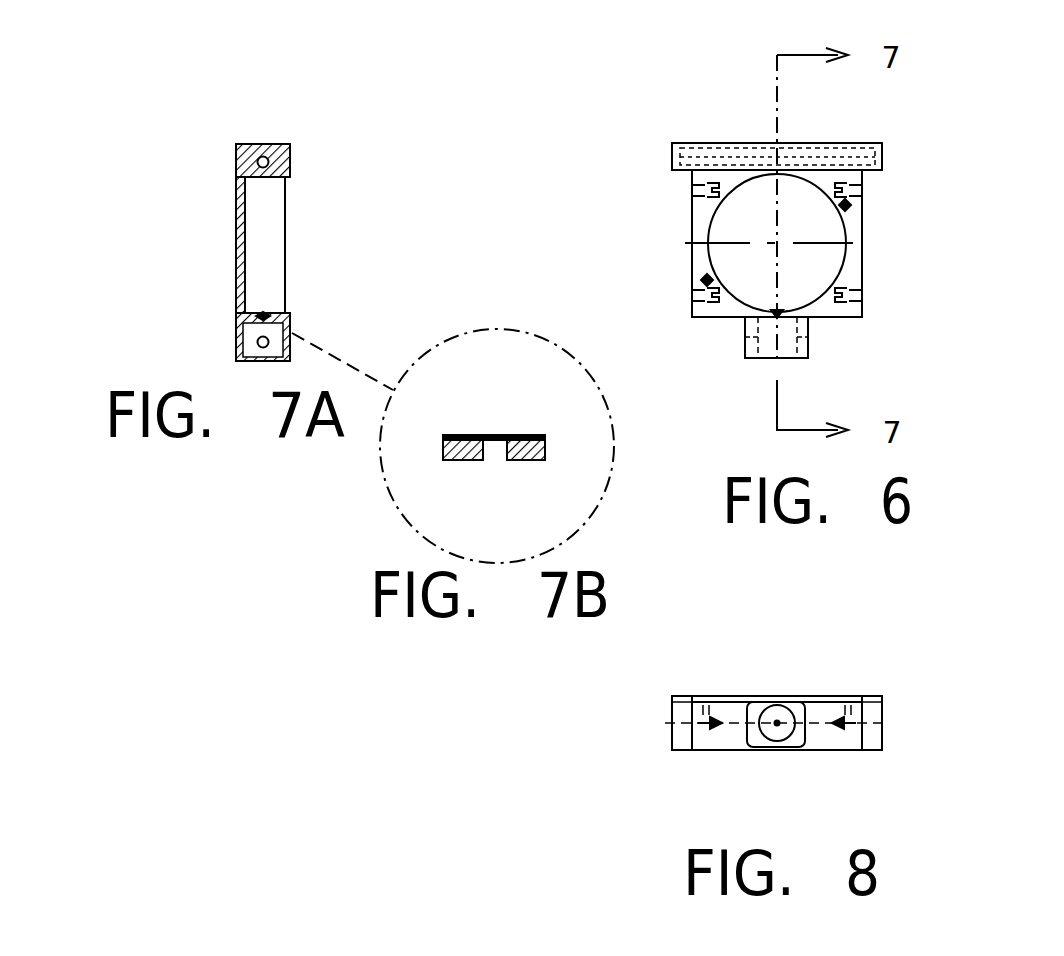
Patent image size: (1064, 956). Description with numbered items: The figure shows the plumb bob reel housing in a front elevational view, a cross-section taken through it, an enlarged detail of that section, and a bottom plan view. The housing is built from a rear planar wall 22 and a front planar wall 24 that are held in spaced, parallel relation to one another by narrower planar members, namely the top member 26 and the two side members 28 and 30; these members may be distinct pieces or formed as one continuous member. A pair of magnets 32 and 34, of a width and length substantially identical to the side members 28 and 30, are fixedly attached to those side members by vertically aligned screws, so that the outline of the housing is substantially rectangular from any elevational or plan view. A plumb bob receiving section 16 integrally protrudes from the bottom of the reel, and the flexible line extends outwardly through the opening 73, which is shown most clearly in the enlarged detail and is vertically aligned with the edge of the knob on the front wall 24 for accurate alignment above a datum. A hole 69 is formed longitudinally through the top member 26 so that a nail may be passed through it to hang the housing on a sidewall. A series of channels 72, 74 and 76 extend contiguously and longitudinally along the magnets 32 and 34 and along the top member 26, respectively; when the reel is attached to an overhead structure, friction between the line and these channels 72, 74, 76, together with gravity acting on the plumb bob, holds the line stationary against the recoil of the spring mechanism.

In FIG. 6, the plumb bob receiving section 16 is at (808, 355).
In FIG. 8, the plumb bob receiving section 16 is at (800, 743).
In FIG. 7A, the rear planar wall 22 is at (236, 229).
In FIG. 7A, the front planar wall 24 is at (287, 221).
In FIG. 7A, the top member 26 is at (278, 147).
In FIG. 6, the top member 26 is at (707, 143).
In FIG. 6, the side member 28 is at (692, 227).
In FIG. 6, the side member 30 is at (862, 213).
In FIG. 8, the magnet 32 is at (677, 742).
In FIG. 8, the magnet 34 is at (873, 700).
In FIG. 6, the hole 69 is at (668, 157).
In FIG. 8, the channel 72 is at (673, 725).
In FIG. 7B, the opening 73 is at (494, 456).
In FIG. 8, the channel 74 is at (882, 725).
In FIG. 7A, the channel 76 is at (218, 108).
In FIG. 6, the channel 76 is at (816, 130).